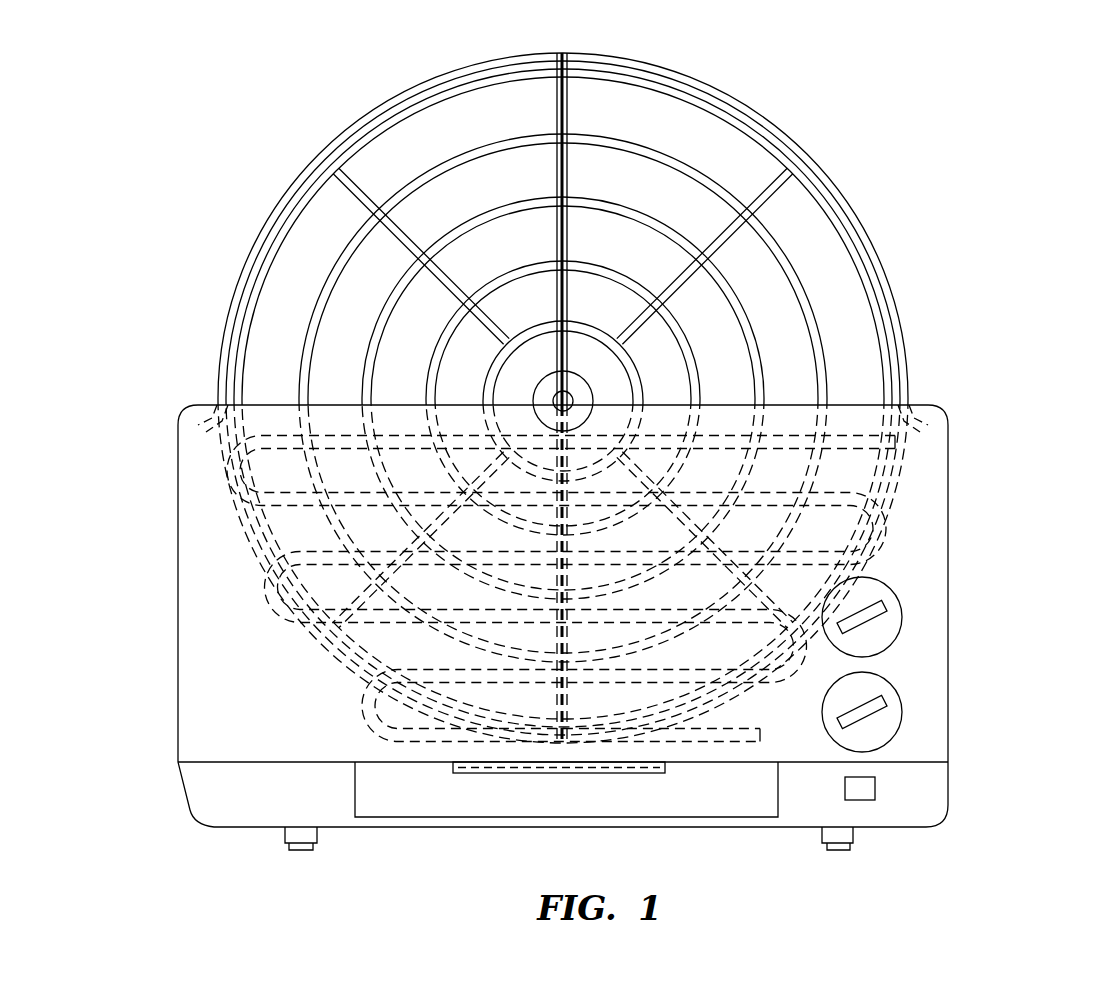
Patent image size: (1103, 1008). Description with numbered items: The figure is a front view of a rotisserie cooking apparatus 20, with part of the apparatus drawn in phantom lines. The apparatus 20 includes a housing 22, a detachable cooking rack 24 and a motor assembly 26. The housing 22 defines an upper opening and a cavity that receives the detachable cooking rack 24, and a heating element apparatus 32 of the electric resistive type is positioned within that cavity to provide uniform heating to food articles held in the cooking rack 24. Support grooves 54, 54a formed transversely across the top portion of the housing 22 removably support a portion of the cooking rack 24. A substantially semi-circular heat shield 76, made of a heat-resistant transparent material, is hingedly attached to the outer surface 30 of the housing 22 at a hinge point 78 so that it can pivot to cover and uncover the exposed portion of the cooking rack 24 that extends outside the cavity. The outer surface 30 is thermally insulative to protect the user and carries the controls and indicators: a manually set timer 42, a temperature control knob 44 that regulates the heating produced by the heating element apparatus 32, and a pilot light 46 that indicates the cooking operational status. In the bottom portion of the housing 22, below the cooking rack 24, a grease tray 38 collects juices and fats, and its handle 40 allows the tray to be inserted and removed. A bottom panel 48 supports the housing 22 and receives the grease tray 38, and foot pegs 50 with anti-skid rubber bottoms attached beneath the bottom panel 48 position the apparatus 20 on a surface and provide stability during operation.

The rotisserie cooking apparatus 20 is at (993, 357).
The housing 22 is at (938, 532).
The detachable cooking rack 24 is at (571, 398).
The heat shield 76 is at (862, 222).
The motor assembly 26 is at (652, 396).
The support groove 54 is at (594, 330).
The support groove 54a is at (566, 398).
The hinge point 78 is at (215, 403).
The heating element apparatus 32 is at (882, 527).
The outer surface 30 is at (916, 647).
The temperature control knob 44 is at (892, 600).
The timer 42 is at (893, 688).
The bottom panel 48 is at (563, 832).
The grease tray 38 is at (480, 808).
The handle 40 is at (666, 768).
The pilot light 46 is at (875, 790).
The foot pegs 50 is at (836, 850).